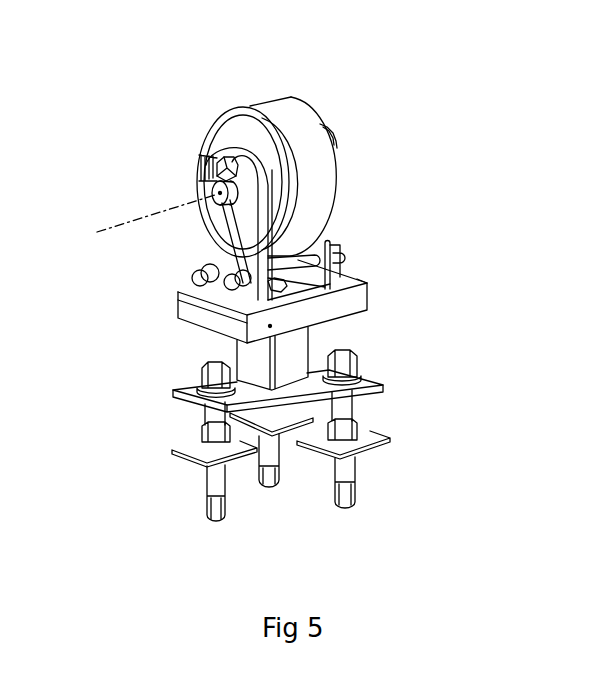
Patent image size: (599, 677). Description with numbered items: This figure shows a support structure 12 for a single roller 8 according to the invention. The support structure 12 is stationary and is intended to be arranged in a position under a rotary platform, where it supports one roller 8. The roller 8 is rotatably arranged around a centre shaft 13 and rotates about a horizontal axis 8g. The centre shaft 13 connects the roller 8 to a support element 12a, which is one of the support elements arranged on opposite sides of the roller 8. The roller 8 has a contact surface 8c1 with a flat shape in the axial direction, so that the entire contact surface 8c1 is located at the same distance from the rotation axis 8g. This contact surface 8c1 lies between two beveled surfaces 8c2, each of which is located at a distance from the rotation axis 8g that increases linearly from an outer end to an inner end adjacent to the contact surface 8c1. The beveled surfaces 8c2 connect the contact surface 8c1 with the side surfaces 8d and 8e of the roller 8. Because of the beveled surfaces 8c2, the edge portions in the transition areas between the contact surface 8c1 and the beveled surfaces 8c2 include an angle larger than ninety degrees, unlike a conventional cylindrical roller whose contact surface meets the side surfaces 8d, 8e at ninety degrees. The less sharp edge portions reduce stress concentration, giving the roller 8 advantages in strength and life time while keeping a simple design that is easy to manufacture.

The roller 8 is at (323, 182).
The contact surface 8c1 is at (273, 113).
The beveled surfaces 8c2 is at (323, 70).
The side surface 8d is at (338, 153).
The side surface 8e is at (218, 137).
The horizontal axis 8g is at (130, 220).
The support structure 12 is at (212, 298).
The support element 12a is at (252, 212).
The centre shaft 13 is at (218, 190).